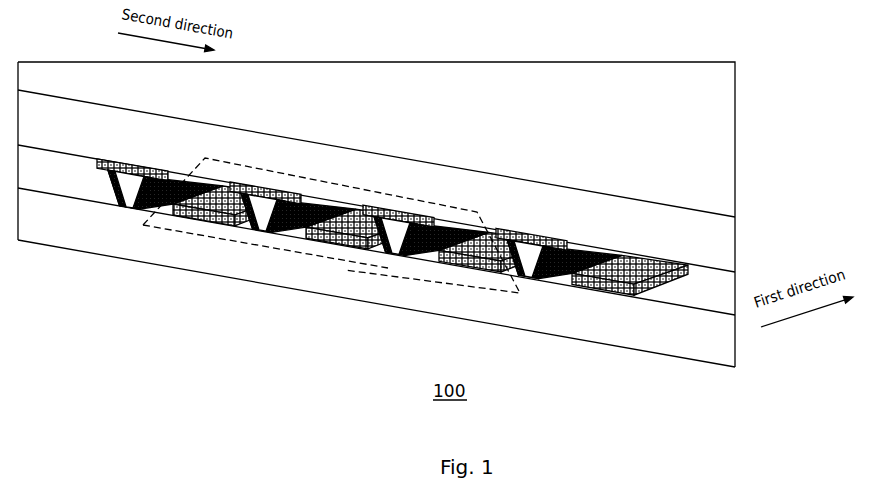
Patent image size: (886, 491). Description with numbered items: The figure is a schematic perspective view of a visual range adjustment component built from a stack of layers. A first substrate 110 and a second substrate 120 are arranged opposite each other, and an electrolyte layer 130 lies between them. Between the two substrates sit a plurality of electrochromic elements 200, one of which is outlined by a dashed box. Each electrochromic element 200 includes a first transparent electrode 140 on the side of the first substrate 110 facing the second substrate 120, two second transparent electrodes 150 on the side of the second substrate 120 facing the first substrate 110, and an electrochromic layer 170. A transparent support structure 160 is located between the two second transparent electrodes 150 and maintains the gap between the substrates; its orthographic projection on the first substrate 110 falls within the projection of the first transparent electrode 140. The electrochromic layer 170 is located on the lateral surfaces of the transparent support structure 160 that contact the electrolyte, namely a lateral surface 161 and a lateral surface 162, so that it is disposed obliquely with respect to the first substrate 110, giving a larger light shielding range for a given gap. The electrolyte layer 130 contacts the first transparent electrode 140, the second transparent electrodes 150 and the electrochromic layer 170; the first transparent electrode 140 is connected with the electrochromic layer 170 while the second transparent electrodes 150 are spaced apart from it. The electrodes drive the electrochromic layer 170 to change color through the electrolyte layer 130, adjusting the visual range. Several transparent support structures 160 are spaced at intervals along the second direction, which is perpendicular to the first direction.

The first substrate 110 is at (694, 167).
The second substrate 120 is at (93, 246).
The electrolyte layer 130 is at (694, 285).
The first transparent electrode 140 is at (533, 240).
The second transparent electrode 150 is at (472, 212).
The transparent support structure 160 is at (260, 195).
The lateral surface 161 is at (385, 250).
The lateral surface 162 is at (410, 254).
The electrochromic layer 170 is at (387, 223).
The electrochromic element 200 is at (243, 248).